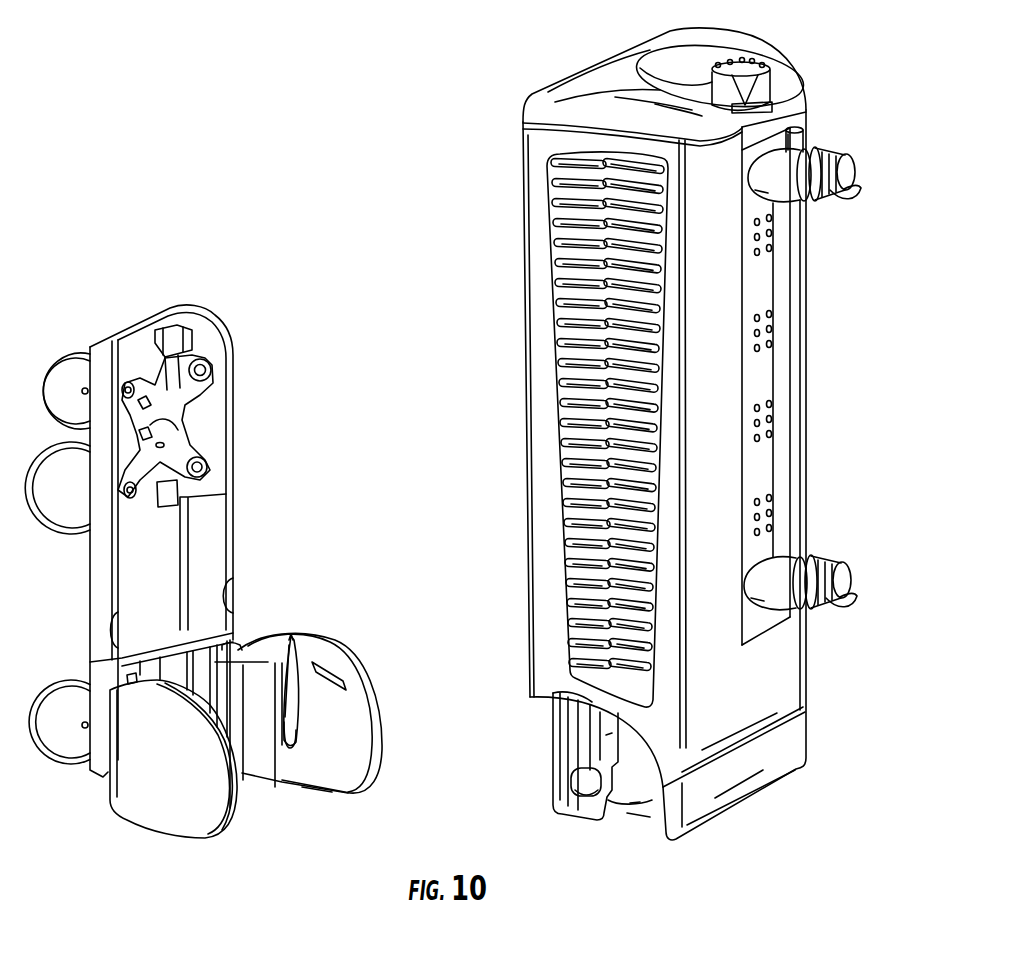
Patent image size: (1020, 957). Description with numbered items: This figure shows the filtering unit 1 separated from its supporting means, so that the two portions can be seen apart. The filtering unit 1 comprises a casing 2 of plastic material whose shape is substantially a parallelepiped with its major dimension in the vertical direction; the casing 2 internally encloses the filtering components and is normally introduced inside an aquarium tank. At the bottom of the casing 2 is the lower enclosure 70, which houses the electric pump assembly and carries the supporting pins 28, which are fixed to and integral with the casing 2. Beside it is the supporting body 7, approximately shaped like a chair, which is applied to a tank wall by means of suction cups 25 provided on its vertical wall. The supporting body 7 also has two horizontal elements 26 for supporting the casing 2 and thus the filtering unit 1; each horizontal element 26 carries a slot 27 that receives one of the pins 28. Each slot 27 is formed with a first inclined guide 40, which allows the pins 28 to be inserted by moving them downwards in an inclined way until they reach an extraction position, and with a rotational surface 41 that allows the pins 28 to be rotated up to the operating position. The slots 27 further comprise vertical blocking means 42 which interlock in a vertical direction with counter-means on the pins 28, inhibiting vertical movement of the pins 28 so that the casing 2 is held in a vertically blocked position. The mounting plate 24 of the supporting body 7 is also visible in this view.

The filtering unit 1 is at (836, 105).
The casing 2 is at (540, 406).
The supporting body 7 is at (113, 316).
The mounting plate 24 is at (236, 359).
The suction cups 25 is at (73, 400).
The horizontal elements 26 is at (326, 643).
The slots 27 is at (298, 698).
The supporting pins 28 is at (588, 778).
The first inclined guide 40 is at (291, 633).
The rotational surface 41 is at (276, 742).
The vertical blocking means 42 is at (580, 762).
The lower enclosure 70 is at (637, 777).